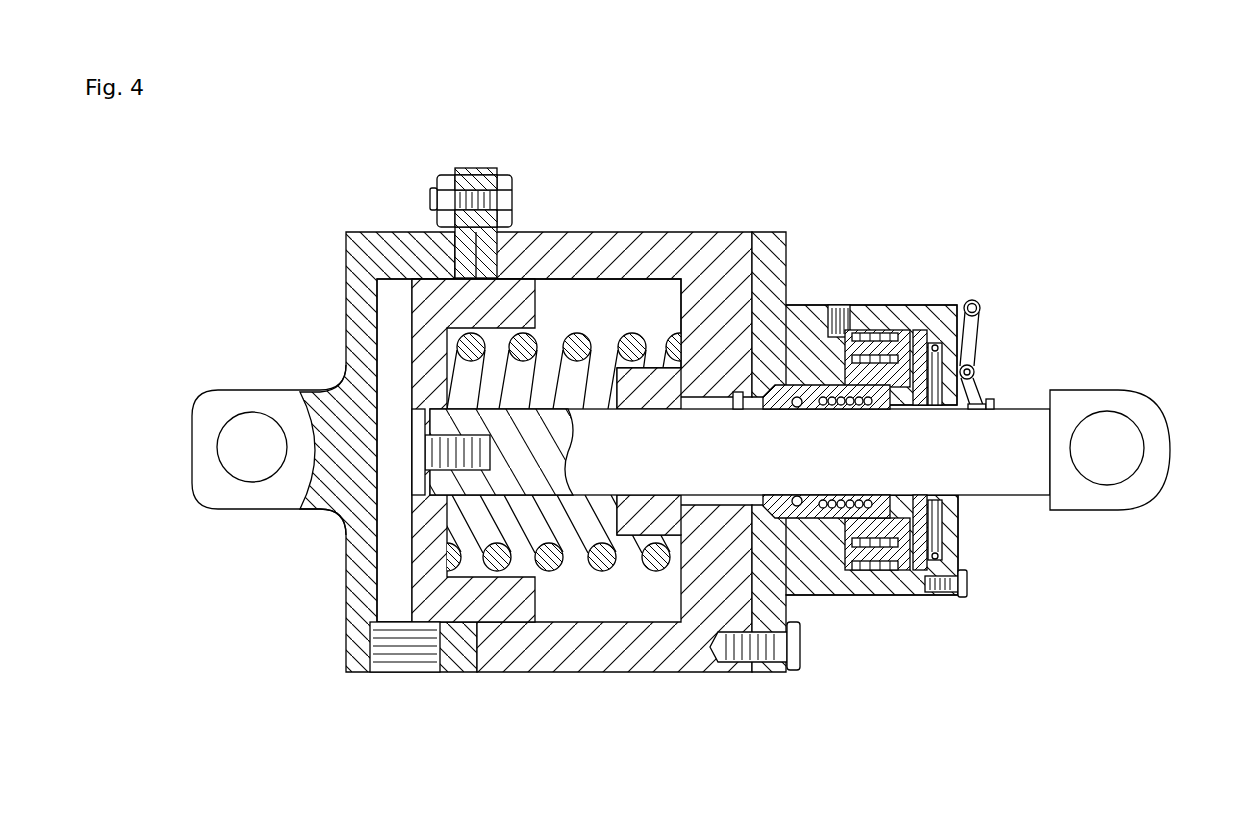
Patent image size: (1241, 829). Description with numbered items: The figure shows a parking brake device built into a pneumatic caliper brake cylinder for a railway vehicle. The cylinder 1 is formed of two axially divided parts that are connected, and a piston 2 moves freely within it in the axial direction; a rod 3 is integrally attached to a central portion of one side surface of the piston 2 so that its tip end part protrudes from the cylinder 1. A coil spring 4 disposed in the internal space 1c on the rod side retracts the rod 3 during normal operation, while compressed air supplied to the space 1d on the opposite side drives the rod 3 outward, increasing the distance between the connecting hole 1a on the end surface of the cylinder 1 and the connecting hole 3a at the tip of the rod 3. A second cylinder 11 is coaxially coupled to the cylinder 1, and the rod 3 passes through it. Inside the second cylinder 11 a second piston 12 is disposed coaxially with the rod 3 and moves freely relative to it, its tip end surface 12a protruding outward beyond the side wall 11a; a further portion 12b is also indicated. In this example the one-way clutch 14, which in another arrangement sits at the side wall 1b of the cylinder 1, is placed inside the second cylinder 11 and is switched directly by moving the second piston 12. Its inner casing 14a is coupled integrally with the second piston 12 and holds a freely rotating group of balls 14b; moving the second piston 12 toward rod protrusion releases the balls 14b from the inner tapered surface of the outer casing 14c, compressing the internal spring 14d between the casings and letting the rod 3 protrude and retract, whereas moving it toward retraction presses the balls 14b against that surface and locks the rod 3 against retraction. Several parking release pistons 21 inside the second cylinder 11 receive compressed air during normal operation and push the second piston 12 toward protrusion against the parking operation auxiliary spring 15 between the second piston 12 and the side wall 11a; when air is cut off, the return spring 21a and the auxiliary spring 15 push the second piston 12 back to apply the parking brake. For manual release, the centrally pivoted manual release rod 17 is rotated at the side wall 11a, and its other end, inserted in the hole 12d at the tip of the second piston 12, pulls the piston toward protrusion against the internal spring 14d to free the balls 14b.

The cylinder 1 is at (624, 248).
The connecting hole 1a is at (256, 462).
The side wall 1b is at (736, 245).
The internal space 1c is at (566, 298).
The space 1d is at (383, 596).
The piston 2 is at (470, 640).
The rod 3 is at (586, 485).
The connecting hole 3a is at (1128, 450).
The coil spring 4 is at (579, 340).
The second cylinder 11 is at (800, 322).
The side wall 11a is at (960, 545).
The second piston 12 is at (920, 338).
The tip end surface 12a is at (990, 402).
The retainer fixing bolt 12b is at (955, 520).
The hole 12d is at (976, 410).
The one-way clutch 14 is at (822, 520).
The inner casing 14a is at (830, 497).
The group of balls 14b is at (795, 406).
The outer casing 14c is at (800, 412).
The internal spring 14d is at (860, 412).
The parking operation auxiliary spring 15 is at (936, 348).
The manual release rod 17 is at (976, 320).
The parking release pistons 21 is at (900, 342).
The return spring 21a is at (871, 335).